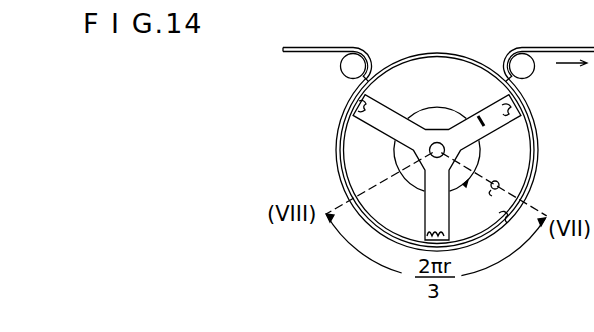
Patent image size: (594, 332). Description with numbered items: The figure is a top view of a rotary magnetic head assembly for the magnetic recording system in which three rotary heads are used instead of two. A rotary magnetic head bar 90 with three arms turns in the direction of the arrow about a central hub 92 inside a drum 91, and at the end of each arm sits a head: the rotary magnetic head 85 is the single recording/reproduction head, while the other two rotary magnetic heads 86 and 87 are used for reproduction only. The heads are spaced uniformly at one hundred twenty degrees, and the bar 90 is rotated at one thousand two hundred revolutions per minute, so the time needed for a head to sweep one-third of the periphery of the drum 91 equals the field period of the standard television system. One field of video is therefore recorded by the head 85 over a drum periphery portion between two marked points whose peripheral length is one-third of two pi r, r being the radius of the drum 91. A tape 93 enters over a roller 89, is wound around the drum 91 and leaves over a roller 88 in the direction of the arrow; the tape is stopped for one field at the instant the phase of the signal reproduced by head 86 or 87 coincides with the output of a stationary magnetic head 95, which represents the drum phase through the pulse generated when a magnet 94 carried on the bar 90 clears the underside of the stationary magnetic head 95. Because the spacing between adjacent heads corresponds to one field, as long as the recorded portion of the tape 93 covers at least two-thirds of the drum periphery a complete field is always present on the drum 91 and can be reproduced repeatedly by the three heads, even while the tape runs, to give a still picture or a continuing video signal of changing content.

The recording/reproduction rotary magnetic head 85 is at (424, 236).
The rotary magnetic head 86 is at (524, 103).
The rotary magnetic head 87 is at (357, 103).
The guide roller 88 is at (535, 65).
The guide roller 89 is at (343, 70).
The rotary magnetic head bar 90 is at (380, 126).
The drum 91 is at (504, 220).
The hub 92 is at (480, 152).
The tape 93 is at (317, 46).
The magnet 94 is at (480, 117).
The stationary magnetic head 95 is at (504, 184).